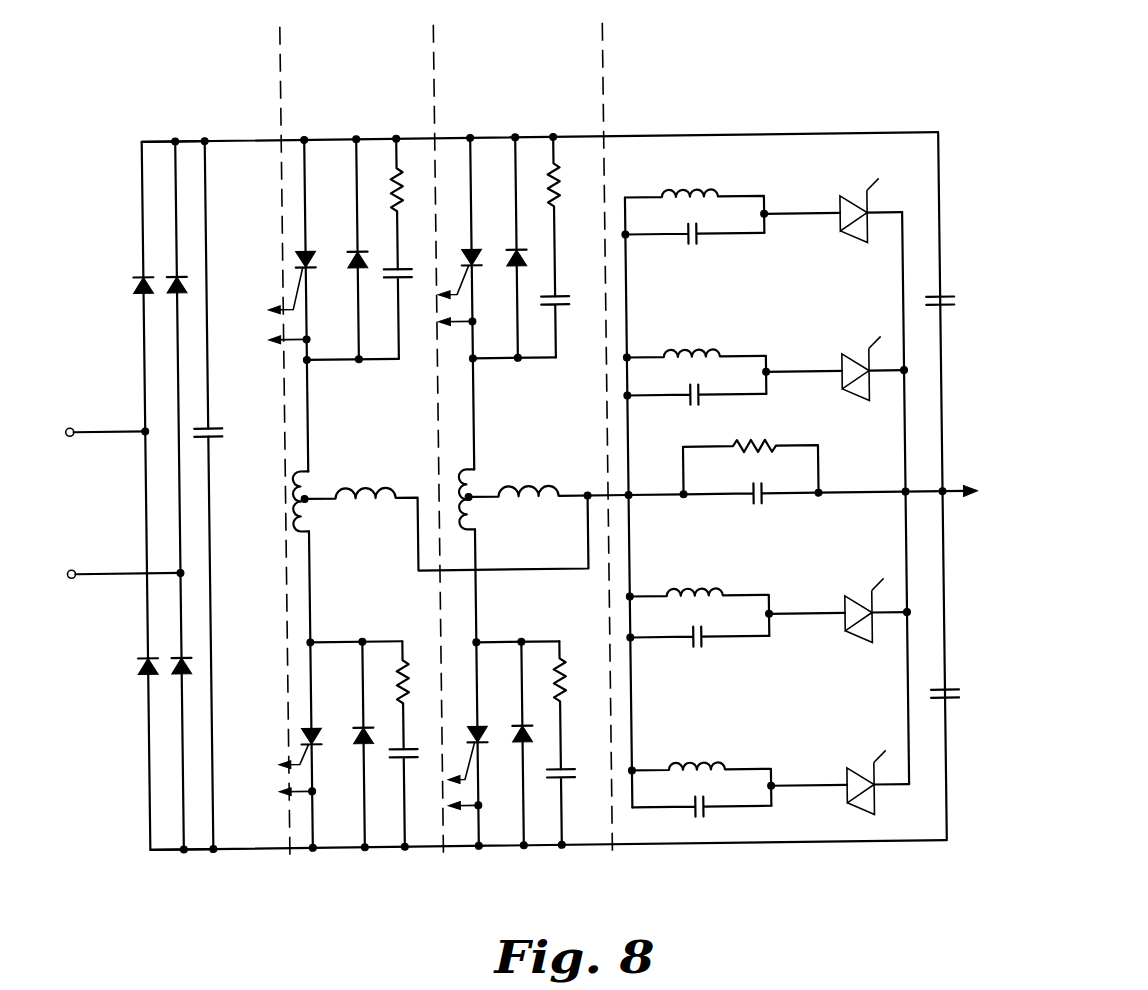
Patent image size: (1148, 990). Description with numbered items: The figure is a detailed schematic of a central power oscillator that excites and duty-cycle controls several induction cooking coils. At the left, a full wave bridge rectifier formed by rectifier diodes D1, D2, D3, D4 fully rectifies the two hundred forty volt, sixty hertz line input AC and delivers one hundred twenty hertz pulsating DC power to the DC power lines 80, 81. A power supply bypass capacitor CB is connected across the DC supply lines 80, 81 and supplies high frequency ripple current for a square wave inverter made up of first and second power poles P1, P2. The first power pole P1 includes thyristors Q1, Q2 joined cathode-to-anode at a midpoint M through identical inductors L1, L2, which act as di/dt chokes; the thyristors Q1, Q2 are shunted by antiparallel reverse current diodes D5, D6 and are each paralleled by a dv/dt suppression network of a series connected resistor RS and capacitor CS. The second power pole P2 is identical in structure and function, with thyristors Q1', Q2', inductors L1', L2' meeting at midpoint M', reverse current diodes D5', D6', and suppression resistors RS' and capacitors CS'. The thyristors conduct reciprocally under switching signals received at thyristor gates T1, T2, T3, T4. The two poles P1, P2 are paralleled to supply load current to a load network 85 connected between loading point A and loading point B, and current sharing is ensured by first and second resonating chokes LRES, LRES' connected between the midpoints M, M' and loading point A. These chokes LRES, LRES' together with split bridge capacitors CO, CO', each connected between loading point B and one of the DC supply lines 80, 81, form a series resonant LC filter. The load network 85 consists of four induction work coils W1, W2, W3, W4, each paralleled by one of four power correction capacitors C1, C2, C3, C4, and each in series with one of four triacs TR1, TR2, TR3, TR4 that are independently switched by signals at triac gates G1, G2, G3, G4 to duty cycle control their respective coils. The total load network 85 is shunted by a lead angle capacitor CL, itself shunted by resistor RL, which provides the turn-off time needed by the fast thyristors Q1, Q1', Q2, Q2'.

The DC power line 80 is at (166, 136).
The DC power line 81 is at (168, 846).
The load network 85 is at (766, 476).
The rectifier diode D1 is at (136, 282).
The rectifier diode D2 is at (183, 282).
The rectifier diode D3 is at (136, 664).
The rectifier diode D4 is at (183, 662).
The power supply bypass capacitor CB is at (214, 434).
The 240 VAC 60 Hz input AC is at (125, 502).
The first power pole P1 is at (438, 37).
The second power pole P2 is at (608, 37).
The thyristor Q1 is at (318, 240).
The thyristor Q2 is at (324, 716).
The thyristor Q1' is at (484, 232).
The thyristor Q2' is at (492, 709).
The reverse current diode D5 is at (350, 251).
The reverse current diode D6 is at (356, 743).
The reverse current diode D5' is at (511, 249).
The reverse current diode D6' is at (517, 742).
The resistor RS is at (389, 444).
The capacitor CS is at (408, 535).
The resistor RS' is at (571, 452).
The capacitor CS' is at (568, 570).
The thyristor gate T1 is at (266, 298).
The thyristor gate T2 is at (272, 752).
The thyristor gate T3 is at (436, 286).
The thyristor gate T4 is at (440, 770).
The inductor L1 is at (276, 506).
The inductor L2 is at (277, 543).
The midpoint M is at (319, 475).
The first resonating choke LRES is at (446, 506).
The inductor L1' is at (490, 456).
The inductor L2' is at (490, 534).
The midpoint M' is at (489, 478).
The second resonating choke LRES' is at (548, 468).
The loading point A is at (632, 499).
The loading point B is at (900, 499).
The resistor RL is at (756, 446).
The lead angle capacitor CL is at (762, 500).
The induction work coil W1 is at (690, 192).
The induction work coil W2 is at (698, 352).
The induction work coil W3 is at (698, 592).
The induction work coil W4 is at (698, 766).
The power correction capacitor C1 is at (702, 238).
The power correction capacitor C2 is at (690, 400).
The power correction capacitor C3 is at (702, 642).
The power correction capacitor C4 is at (702, 810).
The triac TR1 is at (846, 236).
The triac TR2 is at (846, 394).
The triac TR3 is at (846, 636).
The triac TR4 is at (846, 808).
The triac gate G1 is at (882, 182).
The triac gate G2 is at (892, 324).
The triac gate G3 is at (892, 566).
The triac gate G4 is at (892, 738).
The split bridge capacitor CO is at (950, 279).
The split bridge capacitor CO' is at (958, 720).